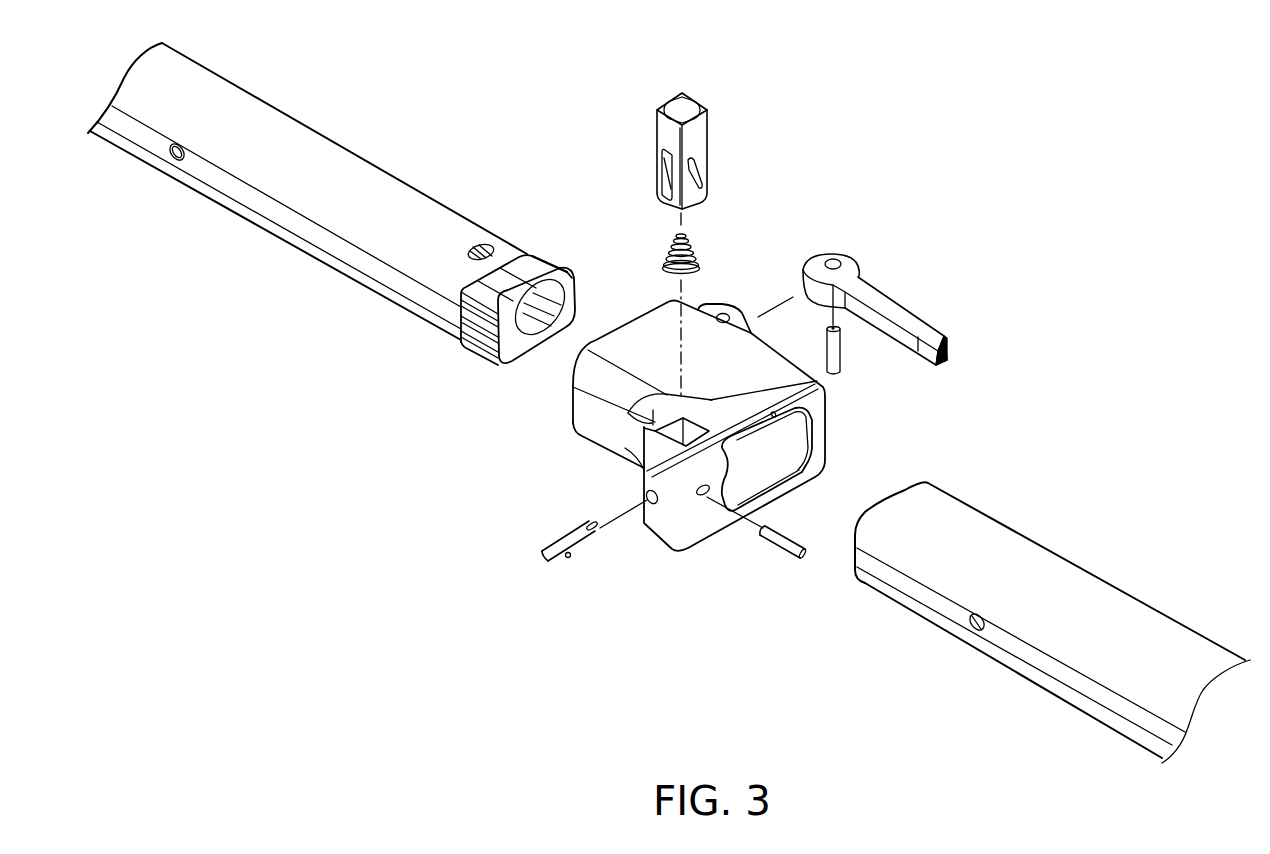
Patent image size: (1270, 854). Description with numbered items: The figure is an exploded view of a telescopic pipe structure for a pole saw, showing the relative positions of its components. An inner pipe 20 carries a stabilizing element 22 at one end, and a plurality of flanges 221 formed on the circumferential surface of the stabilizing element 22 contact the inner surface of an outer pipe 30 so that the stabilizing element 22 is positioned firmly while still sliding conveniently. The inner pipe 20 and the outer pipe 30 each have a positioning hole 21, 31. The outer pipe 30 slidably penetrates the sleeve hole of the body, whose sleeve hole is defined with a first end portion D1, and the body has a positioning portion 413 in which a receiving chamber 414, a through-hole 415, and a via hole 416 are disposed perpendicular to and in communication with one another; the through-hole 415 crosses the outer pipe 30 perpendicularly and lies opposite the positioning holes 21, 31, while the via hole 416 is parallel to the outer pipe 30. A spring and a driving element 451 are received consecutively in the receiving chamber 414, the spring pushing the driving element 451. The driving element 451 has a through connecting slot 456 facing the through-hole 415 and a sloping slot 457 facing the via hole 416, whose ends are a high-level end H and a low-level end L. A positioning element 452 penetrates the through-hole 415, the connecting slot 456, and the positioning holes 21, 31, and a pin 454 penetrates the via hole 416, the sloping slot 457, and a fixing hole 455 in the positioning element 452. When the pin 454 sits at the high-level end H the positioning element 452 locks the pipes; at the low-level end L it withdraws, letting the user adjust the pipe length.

The inner pipe 20 is at (317, 165).
The positioning hole 21 is at (174, 161).
The stabilizing element 22 is at (498, 360).
The flanges 221 is at (512, 268).
The outer pipe 30 is at (1008, 553).
The positioning hole 31 is at (970, 628).
The positioning portion 413 is at (718, 475).
The receiving chamber 414 is at (643, 438).
The through-hole 415 is at (652, 505).
The via hole 416 is at (703, 498).
The driving element 451 is at (698, 139).
The positioning element 452 is at (542, 580).
The pin 454 is at (777, 550).
The fixing hole 455 is at (568, 559).
The connecting slot 456 is at (663, 177).
The sloping slot 457 is at (702, 170).
The first end portion D1 is at (823, 455).
The low-level end L is at (698, 166).
The high-level end H is at (703, 183).